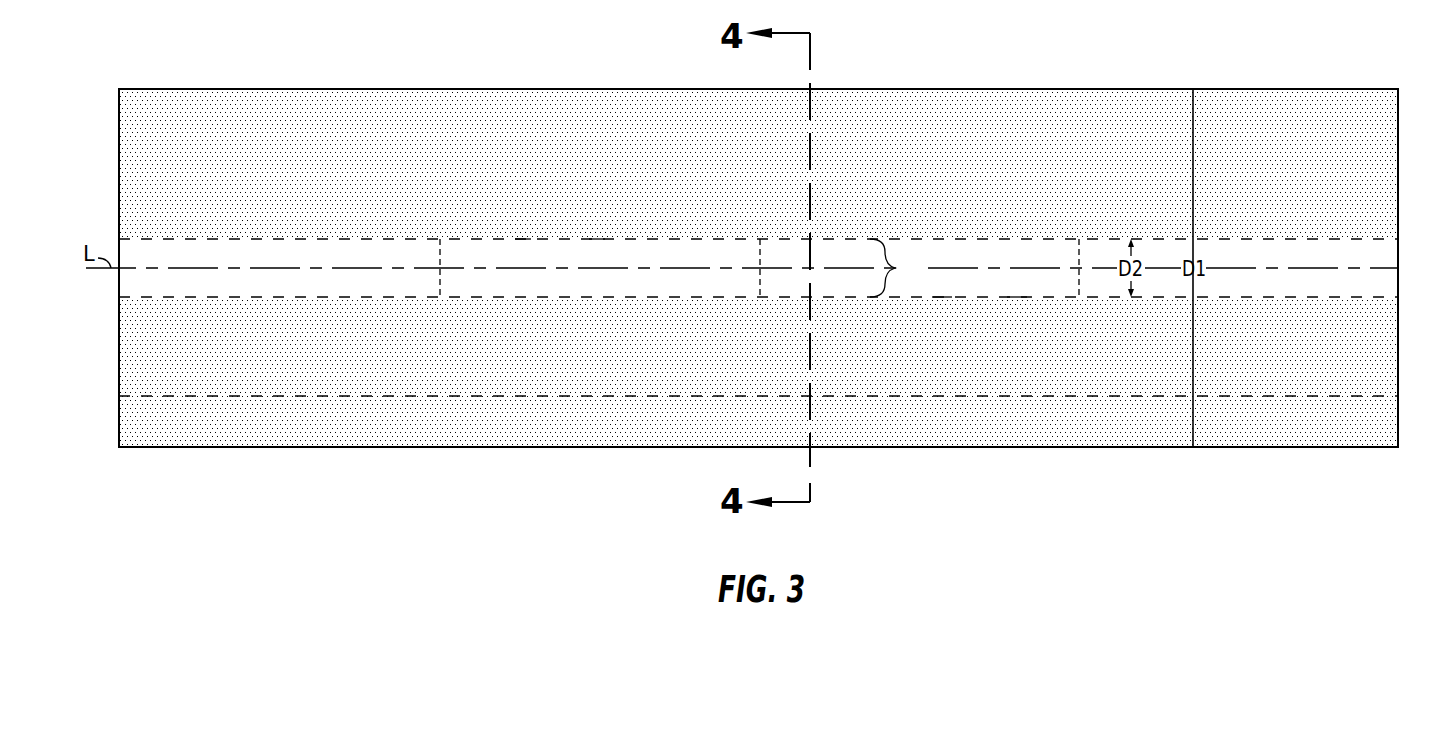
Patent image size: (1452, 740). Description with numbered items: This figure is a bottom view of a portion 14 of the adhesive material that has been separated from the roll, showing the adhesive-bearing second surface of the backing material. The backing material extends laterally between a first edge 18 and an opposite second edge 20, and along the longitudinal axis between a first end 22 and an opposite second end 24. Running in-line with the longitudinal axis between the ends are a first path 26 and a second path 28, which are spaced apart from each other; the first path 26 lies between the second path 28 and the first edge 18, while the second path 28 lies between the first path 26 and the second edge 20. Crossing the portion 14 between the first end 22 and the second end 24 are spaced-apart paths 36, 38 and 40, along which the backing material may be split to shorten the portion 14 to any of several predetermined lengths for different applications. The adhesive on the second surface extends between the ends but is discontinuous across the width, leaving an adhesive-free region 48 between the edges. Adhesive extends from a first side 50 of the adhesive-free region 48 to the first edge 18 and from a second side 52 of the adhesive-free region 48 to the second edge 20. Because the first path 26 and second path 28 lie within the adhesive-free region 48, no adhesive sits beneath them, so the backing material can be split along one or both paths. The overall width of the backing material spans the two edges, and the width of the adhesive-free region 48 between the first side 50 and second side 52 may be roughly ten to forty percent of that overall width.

The portion of the adhesive material 14 is at (1354, 82).
The first edge 18 is at (165, 448).
The second edge 20 is at (166, 89).
The first end 22 is at (118, 163).
The second end 24 is at (1398, 368).
The first path 26 is at (1017, 290).
The second path 28 is at (597, 250).
The path 36 is at (438, 255).
The path 38 is at (758, 258).
The path 40 is at (1078, 259).
The adhesive-free region 48 is at (758, 268).
The first side 50 is at (942, 298).
The second side 52 is at (523, 237).